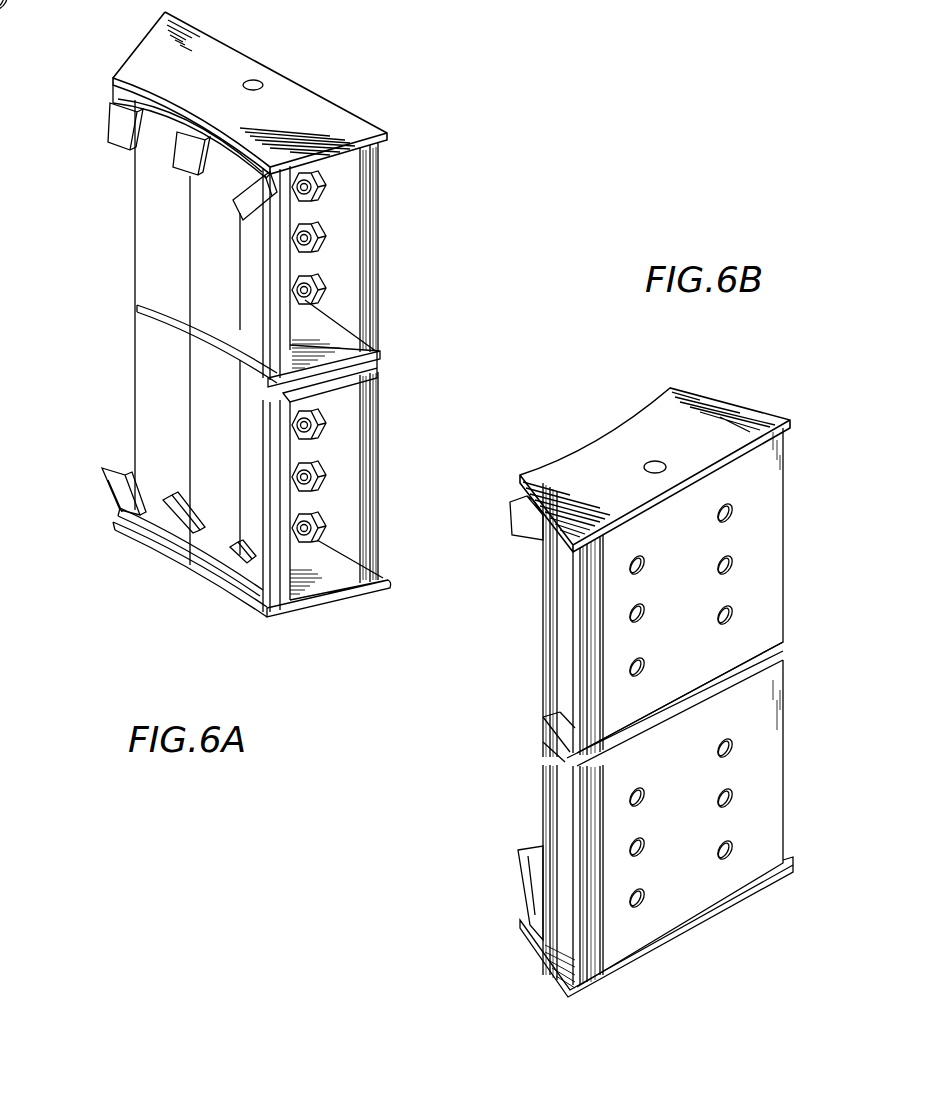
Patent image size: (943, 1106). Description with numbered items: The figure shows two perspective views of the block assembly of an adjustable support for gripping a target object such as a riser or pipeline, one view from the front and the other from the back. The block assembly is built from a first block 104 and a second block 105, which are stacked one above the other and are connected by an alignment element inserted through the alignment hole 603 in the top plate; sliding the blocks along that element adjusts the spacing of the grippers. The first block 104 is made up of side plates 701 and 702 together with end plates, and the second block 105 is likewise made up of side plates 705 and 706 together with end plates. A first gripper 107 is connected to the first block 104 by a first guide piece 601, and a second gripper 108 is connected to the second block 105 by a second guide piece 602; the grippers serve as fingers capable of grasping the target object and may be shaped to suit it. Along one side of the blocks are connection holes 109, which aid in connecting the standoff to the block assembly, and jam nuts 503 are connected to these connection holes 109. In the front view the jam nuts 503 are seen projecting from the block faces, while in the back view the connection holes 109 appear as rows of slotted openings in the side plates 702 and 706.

In FIG. 6A, the alignment hole 603 is at (305, 95).
In FIG. 6B, the alignment hole 603 is at (700, 408).
In FIG. 6A, the first guide piece 601 is at (133, 91).
In FIG. 6A, the first gripper 107 is at (238, 212).
In FIG. 6B, the first gripper 107 is at (522, 540).
In FIG. 6A, the side plate 701 is at (160, 262).
In FIG. 6A, the side plate 705 is at (160, 378).
In FIG. 6A, the first block 104 is at (402, 135).
In FIG. 6A, the second block 105 is at (402, 338).
In FIG. 6A, the jam nuts 503 is at (292, 294).
In FIG. 6A, the second guide piece 602 is at (252, 582).
In FIG. 6A, the second gripper 108 is at (243, 563).
In FIG. 6B, the second gripper 108 is at (520, 858).
In FIG. 6B, the side plate 702 is at (765, 570).
In FIG. 6B, the side plate 706 is at (778, 706).
In FIG. 6B, the connection holes 109 is at (630, 673).